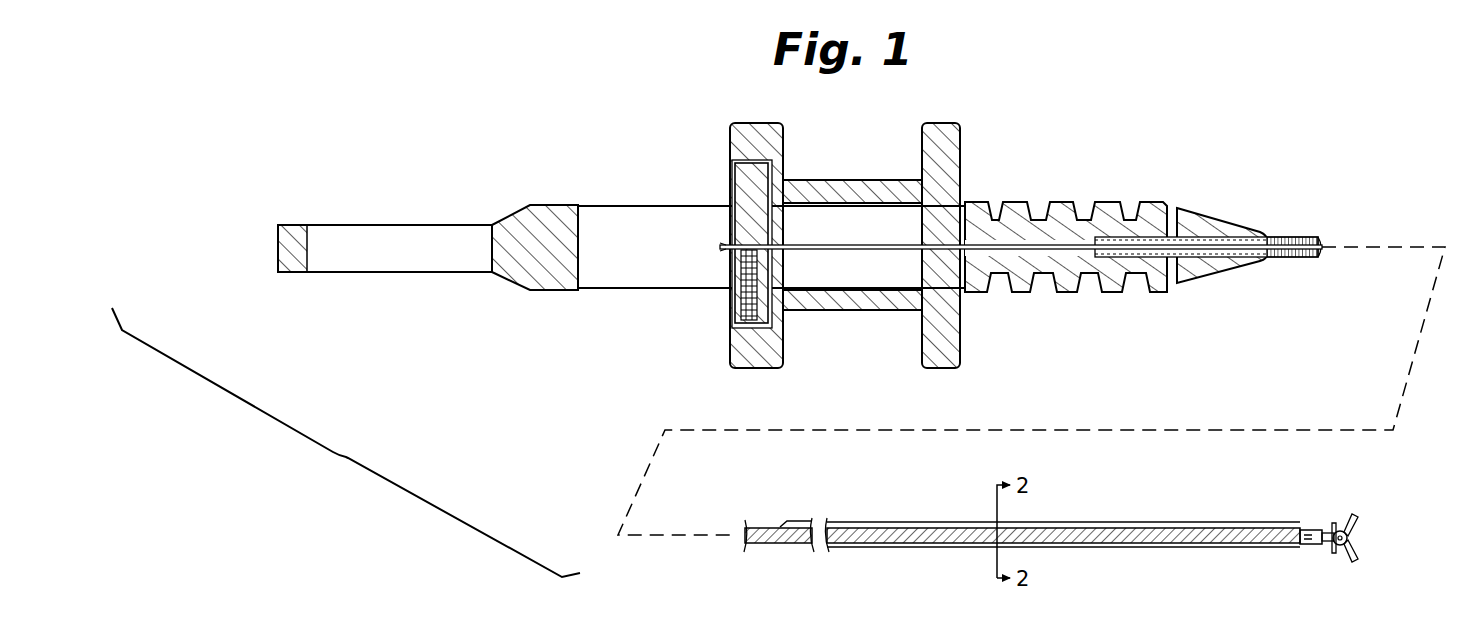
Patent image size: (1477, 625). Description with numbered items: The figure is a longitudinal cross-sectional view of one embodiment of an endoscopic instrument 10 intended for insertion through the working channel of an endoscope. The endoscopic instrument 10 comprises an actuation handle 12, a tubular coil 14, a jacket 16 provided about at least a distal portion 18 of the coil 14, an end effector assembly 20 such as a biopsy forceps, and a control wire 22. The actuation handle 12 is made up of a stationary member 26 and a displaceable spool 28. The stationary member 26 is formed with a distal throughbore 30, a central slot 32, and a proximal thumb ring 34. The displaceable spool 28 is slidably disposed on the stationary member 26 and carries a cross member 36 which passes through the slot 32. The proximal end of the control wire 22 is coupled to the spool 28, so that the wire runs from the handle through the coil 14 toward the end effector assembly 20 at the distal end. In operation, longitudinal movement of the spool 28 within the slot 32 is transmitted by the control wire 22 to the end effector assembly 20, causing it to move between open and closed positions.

The endoscopic instrument 10 is at (340, 455).
The actuation handle 12 is at (652, 158).
The tubular coil 14 is at (1297, 235).
The jacket 16 is at (1172, 548).
The distal portion 18 is at (1125, 519).
The end effector assembly 20 is at (1340, 508).
The control wire 22 is at (905, 250).
The stationary member 26 is at (548, 292).
The displaceable spool 28 is at (738, 345).
The distal throughbore 30 is at (1068, 273).
The central slot 32 is at (627, 215).
The proximal thumb ring 34 is at (397, 237).
The cross member 36 is at (745, 190).